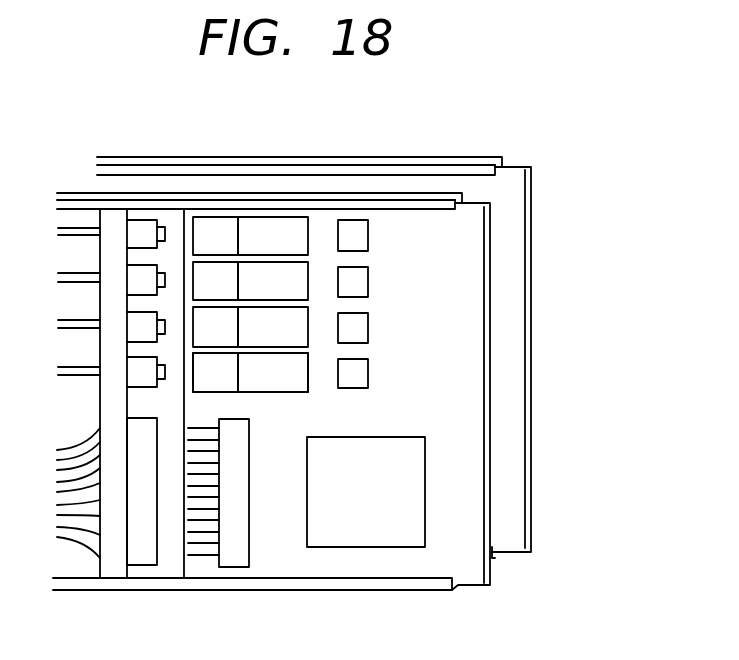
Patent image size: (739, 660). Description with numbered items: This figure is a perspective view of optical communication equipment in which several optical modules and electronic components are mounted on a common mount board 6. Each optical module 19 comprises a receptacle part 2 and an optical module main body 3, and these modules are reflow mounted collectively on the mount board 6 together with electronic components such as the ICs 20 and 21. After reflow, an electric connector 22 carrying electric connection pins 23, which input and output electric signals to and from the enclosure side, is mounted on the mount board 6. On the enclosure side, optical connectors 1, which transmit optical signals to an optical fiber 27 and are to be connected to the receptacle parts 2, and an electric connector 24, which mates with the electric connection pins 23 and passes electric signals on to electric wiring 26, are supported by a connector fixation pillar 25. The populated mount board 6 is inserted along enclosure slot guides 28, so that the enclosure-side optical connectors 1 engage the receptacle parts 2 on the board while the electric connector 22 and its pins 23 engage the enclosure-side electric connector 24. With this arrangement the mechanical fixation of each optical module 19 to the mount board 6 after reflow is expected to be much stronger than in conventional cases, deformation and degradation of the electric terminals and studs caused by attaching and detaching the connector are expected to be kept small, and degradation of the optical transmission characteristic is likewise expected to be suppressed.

The optical connector 1 is at (146, 228).
The receptacle part 2 is at (222, 232).
The optical module main body 3 is at (284, 232).
The mount board 6 is at (515, 228).
The optical module 19 is at (277, 377).
The IC 20 is at (360, 375).
The IC 21 is at (365, 535).
The electric connector 22 is at (237, 558).
The electric connection pin 23 is at (202, 553).
The electric connector 24 is at (143, 557).
The connector fixation pillar 25 is at (112, 555).
The electric wiring 26 is at (73, 545).
The optical fiber 27 is at (78, 228).
The enclosure slot guide 28 is at (385, 158).